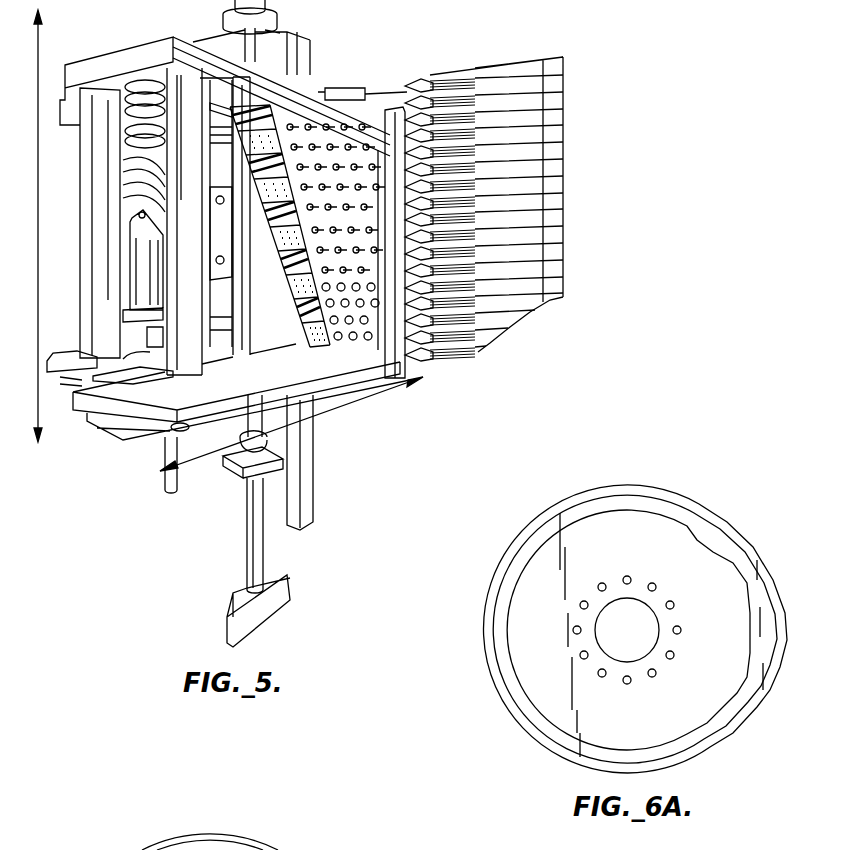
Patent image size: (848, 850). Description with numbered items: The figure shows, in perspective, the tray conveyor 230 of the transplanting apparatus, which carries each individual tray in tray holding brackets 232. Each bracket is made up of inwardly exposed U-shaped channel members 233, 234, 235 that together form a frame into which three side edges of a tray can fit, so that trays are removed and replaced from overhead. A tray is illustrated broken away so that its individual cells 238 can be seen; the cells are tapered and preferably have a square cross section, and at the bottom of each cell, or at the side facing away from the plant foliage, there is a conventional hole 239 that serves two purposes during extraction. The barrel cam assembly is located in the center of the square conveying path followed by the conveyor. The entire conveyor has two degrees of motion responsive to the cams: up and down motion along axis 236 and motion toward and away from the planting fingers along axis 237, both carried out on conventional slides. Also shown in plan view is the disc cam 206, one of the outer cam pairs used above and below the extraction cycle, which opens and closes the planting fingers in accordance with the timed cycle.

In FIG. 5, the tray holding bracket 232 is at (188, 87).
In FIG. 5, the axis 236 is at (52, 254).
In FIG. 5, the tray conveyor 230 is at (317, 92).
In FIG. 5, the U-shaped channel member 235 is at (348, 130).
In FIG. 5, the cell 238 is at (407, 352).
In FIG. 5, the U-shaped channel member 234 is at (300, 355).
In FIG. 5, the hole 239 is at (350, 337).
In FIG. 5, the U-shaped channel member 233 is at (177, 345).
In FIG. 5, the axis 237 is at (197, 463).
In FIG. 6A, the cam 206 is at (732, 733).